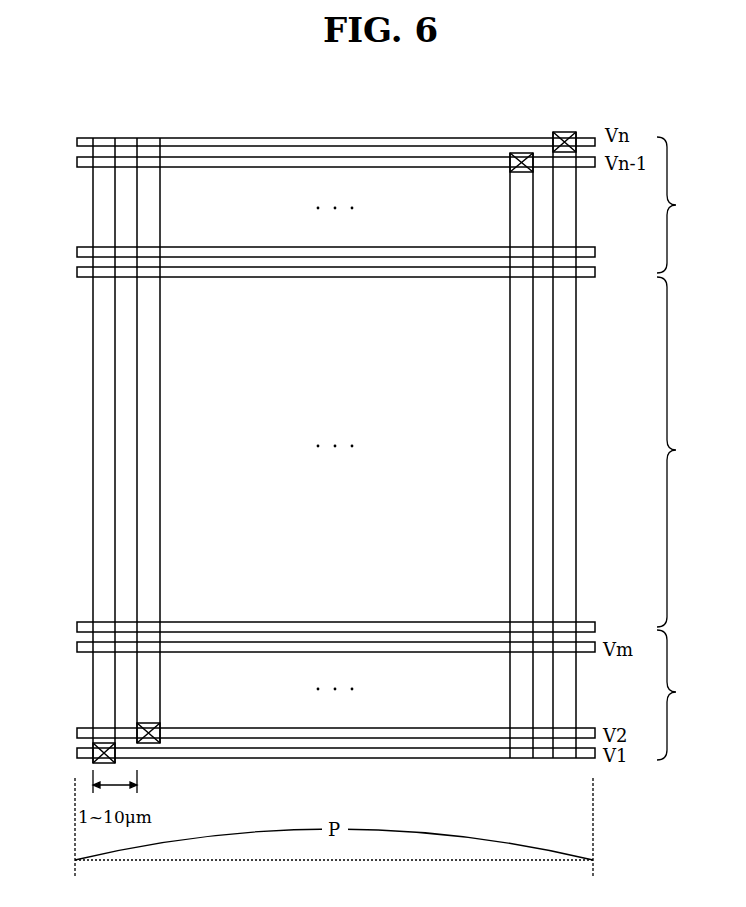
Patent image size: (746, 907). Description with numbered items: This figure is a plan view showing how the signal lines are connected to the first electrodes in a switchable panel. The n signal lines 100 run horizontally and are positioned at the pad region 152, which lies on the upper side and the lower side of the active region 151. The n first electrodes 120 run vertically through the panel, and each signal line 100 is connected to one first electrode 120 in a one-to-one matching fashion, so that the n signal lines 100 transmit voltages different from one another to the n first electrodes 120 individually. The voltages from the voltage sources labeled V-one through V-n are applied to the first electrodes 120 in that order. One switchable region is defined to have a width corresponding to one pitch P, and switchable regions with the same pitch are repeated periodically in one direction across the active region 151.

The signal lines 100 is at (337, 137).
The first electrodes 120 is at (93, 386).
The active region 151 is at (688, 452).
The pad region 152 is at (688, 448).